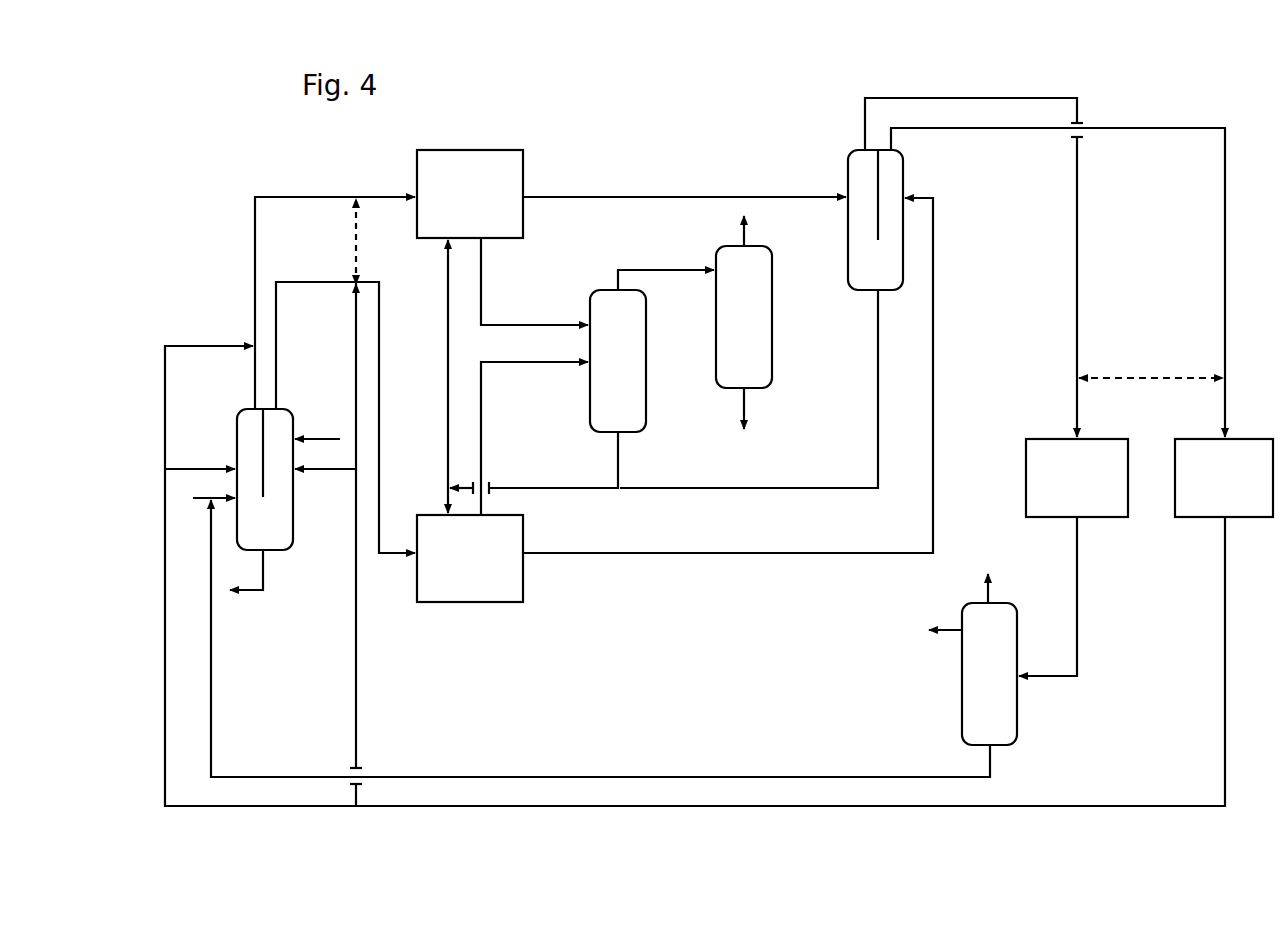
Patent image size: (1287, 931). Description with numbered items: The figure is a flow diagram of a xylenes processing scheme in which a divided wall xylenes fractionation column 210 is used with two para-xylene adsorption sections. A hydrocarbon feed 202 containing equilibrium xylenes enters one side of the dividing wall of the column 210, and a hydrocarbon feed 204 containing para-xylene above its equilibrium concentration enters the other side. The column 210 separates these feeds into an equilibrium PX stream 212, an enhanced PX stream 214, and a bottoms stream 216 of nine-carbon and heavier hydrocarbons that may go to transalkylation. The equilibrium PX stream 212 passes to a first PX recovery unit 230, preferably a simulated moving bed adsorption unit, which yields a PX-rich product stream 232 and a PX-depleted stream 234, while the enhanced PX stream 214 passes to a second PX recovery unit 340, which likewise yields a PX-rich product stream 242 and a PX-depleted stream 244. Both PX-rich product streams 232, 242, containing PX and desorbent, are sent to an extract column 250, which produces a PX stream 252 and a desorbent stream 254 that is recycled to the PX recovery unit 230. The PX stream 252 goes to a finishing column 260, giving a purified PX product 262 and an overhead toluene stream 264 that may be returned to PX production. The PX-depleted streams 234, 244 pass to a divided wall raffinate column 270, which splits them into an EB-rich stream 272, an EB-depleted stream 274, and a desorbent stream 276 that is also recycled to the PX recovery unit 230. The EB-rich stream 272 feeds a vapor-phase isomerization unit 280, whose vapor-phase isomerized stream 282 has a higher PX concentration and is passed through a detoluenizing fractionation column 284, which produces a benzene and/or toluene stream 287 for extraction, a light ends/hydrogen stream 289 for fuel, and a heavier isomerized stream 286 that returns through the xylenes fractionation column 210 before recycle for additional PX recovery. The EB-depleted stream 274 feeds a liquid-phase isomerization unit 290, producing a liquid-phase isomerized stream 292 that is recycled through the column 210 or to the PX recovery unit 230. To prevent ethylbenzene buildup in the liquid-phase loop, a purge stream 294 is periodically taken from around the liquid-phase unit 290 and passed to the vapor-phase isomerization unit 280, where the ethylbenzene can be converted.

The divided wall xylenes fractionation column 210 is at (265, 479).
The first PX recovery unit 230 is at (470, 194).
The second processing unit 340 is at (470, 421).
The extract column 250 is at (618, 361).
The finishing column 260 is at (744, 317).
The divided wall raffinate column 270 is at (875, 220).
The vapor phase xylene isomerization unit 280 is at (1077, 478).
The liquid phase xylene isomerization unit 290 is at (1224, 478).
The detoluenizing fractionation column 284 is at (989, 674).
The hydrocarbon feed 202 is at (213, 488).
The hydrocarbon feed 204 is at (317, 430).
The equilibrium PX stream 212 is at (335, 291).
The enhanced PX stream 214 is at (345, 376).
The bottoms stream 216 is at (254, 581).
The PX-rich product stream 232 is at (534, 281).
The PX-depleted stream 234 is at (684, 184).
The PX-rich product stream 242 is at (534, 438).
The PX-depleted stream 244 is at (728, 388).
The PX stream 252 is at (666, 268).
The desorbent stream 254 is at (550, 463).
The purified PX product 262 is at (759, 408).
The toluene stream 264 is at (759, 231).
The EB-rich stream 272 is at (957, 267).
The EB-depleted stream 274 is at (1058, 282).
The desorbent stream 276 is at (749, 389).
The vapor-phase isomerized stream 282 is at (1064, 596).
The C8+ isomerized stream 286 is at (600, 638).
The benzene and/or toluene stream 287 is at (929, 631).
The light ends/hydrogen stream 289 is at (989, 577).
The liquid-phase isomerized stream 292 is at (712, 545).
The purge stream 294 is at (1151, 391).